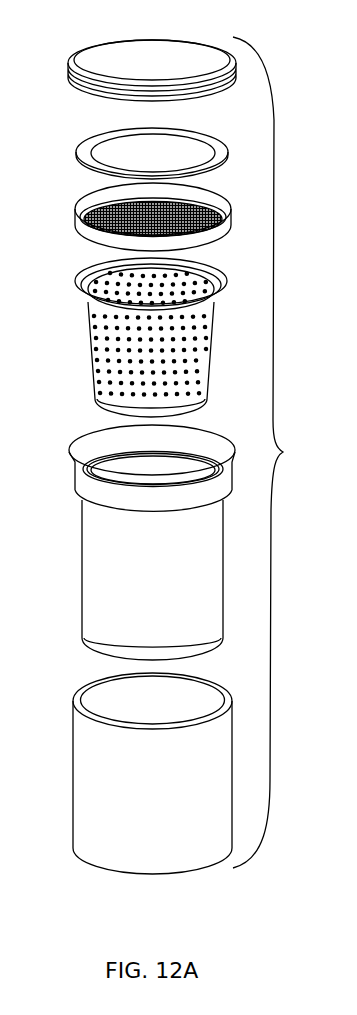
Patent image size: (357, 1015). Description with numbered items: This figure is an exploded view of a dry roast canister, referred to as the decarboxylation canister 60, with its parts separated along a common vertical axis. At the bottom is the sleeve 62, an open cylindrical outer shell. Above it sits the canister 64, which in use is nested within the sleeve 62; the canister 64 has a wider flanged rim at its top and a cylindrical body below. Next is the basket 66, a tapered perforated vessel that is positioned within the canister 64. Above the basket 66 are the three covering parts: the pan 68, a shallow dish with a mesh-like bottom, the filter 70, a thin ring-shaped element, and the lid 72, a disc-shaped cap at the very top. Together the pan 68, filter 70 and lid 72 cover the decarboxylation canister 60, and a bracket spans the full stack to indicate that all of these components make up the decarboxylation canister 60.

The decarboxylation canister 60 is at (278, 452).
The sleeve 62 is at (108, 703).
The canister 64 is at (108, 453).
The basket 66 is at (108, 287).
The pan 68 is at (105, 212).
The filter 70 is at (108, 152).
The lid 72 is at (108, 58).